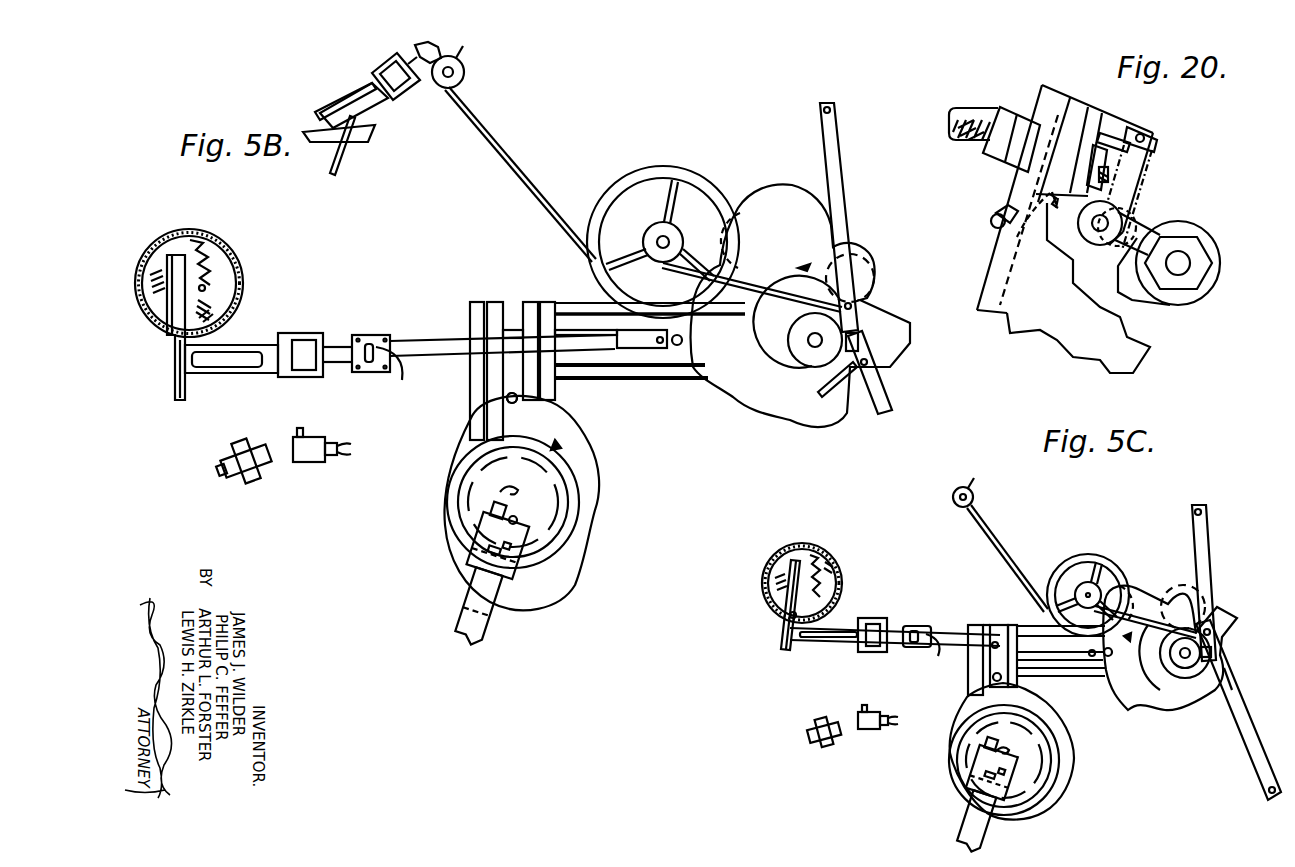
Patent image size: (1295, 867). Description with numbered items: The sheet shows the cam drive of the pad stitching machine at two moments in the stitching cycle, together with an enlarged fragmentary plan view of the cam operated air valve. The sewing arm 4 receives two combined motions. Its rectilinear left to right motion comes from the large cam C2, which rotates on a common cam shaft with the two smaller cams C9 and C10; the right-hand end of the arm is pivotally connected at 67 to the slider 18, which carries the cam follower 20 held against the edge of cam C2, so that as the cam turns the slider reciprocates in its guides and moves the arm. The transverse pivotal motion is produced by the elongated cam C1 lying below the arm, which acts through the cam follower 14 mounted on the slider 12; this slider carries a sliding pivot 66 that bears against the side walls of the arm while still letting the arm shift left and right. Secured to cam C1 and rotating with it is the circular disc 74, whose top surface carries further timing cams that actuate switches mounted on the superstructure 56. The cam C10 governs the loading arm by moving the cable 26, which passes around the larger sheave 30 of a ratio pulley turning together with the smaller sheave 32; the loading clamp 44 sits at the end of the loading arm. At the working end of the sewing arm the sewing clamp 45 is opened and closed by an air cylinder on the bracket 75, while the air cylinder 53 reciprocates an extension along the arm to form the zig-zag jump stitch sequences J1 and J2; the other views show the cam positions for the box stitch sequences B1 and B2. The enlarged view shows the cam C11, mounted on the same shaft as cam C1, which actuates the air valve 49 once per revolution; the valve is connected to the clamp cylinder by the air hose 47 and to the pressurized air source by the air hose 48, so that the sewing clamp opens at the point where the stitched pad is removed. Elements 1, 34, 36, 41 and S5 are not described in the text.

In FIG. 5B, the drum 1 is at (231, 271).
In FIG. 5C, the drum 1 is at (838, 583).
In FIG. 5B, the sewing arm 4 is at (437, 343).
In FIG. 5C, the sewing arm 4 is at (958, 636).
In FIG. 5B, the slider 12 is at (518, 330).
In FIG. 5C, the slider 12 is at (1036, 660).
In FIG. 5B, the cam follower 14 is at (507, 395).
In FIG. 5B, the slider 18 is at (646, 331).
In FIG. 5B, the cam follower 20 is at (672, 346).
In FIG. 5B, the cable 26 is at (518, 164).
In FIG. 5C, the cable 26 is at (1015, 523).
In FIG. 5B, the larger sheave 30 is at (722, 203).
In FIG. 5C, the larger sheave 30 is at (1088, 595).
In FIG. 5B, the smaller sheave 32 is at (657, 230).
In FIG. 5B, the lever 34 is at (843, 165).
In FIG. 5C, the lever 34 is at (1210, 556).
In FIG. 5B, the link 36 is at (818, 388).
In FIG. 5B, the lever arm 41 is at (884, 388).
In FIG. 5C, the lever arm 41 is at (1247, 718).
In FIG. 5B, the loading clamp 44 is at (345, 153).
In FIG. 5B, the sewing clamp 45 is at (187, 285).
In FIG. 5C, the sewing clamp 45 is at (790, 556).
In FIG. 20, the air hose 47 is at (974, 134).
In FIG. 20, the air hose 48 is at (1008, 217).
In FIG. 20, the air valve 49 is at (1090, 113).
In FIG. 5B, the air cylinder 53 is at (308, 340).
In FIG. 5B, the superstructure 56 is at (468, 598).
In FIG. 20, the superstructure 56 is at (1060, 323).
In FIG. 5C, the superstructure 56 is at (972, 812).
In FIG. 5B, the sliding pivot 66 is at (510, 343).
In FIG. 5B, the pivotal connection 67 is at (656, 340).
In FIG. 5B, the circular disc 74 is at (540, 548).
In FIG. 5C, the circular disc 74 is at (1014, 783).
In FIG. 5B, the bracket 75 is at (252, 478).
In FIG. 5C, the bracket 75 is at (830, 742).
In FIG. 5B, the box stitch sequence B1 is at (470, 434).
In FIG. 5B, the box stitch sequence B2 is at (557, 420).
In FIG. 5C, the box stitch sequence B2 is at (824, 614).
In FIG. 5B, the elongated cam C1 is at (565, 420).
In FIG. 5C, the elongated cam C1 is at (1058, 783).
In FIG. 5B, the large cam C2 is at (801, 422).
In FIG. 5C, the large cam C2 is at (1197, 698).
In FIG. 5B, the cam C9 is at (781, 341).
In FIG. 5C, the cam C9 is at (1170, 658).
In FIG. 5B, the cam C10 is at (867, 296).
In FIG. 5C, the cam C10 is at (1198, 605).
In FIG. 20, the cam C11 is at (1200, 287).
In FIG. 5B, the jump stitch sequence J1 is at (682, 341).
In FIG. 5C, the jump stitch sequence J1 is at (992, 703).
In FIG. 5C, the jump stitch sequence J2 is at (1000, 703).
In FIG. 5B, the switch S5 is at (314, 451).
In FIG. 5C, the switch S5 is at (870, 732).